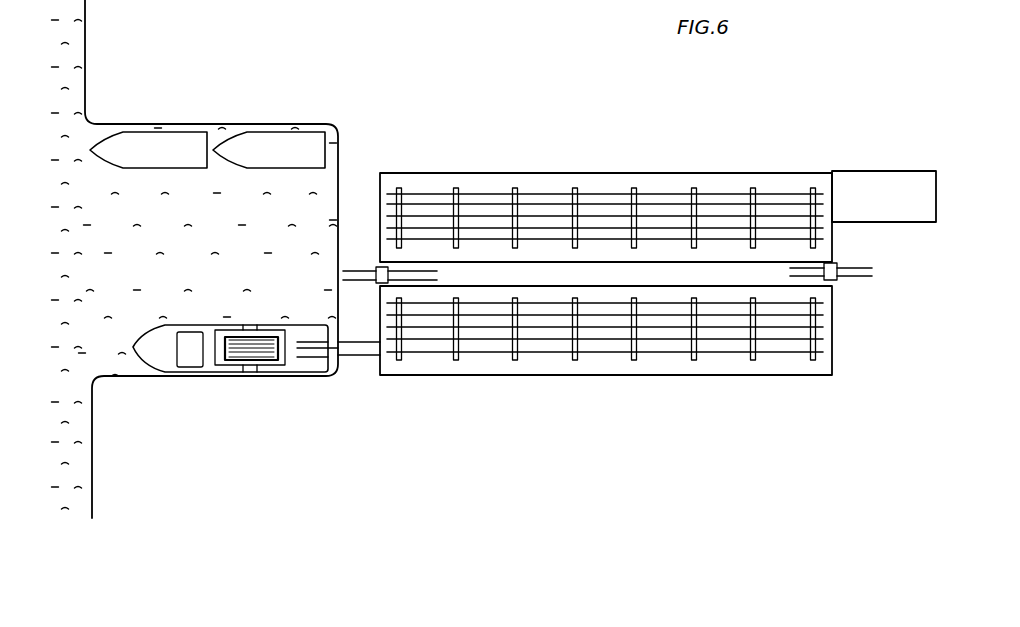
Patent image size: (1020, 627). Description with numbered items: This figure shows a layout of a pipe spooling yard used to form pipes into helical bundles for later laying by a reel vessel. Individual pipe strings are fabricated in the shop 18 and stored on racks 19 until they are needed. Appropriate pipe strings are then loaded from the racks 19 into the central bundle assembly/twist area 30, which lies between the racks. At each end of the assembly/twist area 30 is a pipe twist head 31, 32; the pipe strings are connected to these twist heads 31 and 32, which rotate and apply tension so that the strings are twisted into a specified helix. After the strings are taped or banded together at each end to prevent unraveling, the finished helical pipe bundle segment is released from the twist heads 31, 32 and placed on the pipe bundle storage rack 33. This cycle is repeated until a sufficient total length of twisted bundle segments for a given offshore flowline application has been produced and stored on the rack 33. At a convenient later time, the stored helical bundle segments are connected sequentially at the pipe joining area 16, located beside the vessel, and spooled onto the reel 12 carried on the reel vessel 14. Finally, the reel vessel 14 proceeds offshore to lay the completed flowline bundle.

The reel 12 is at (233, 363).
The reel vessel 14 is at (303, 323).
The pipe joining area 16 is at (365, 358).
The shop 18 is at (878, 189).
The racks 19 is at (513, 189).
The central bundle assembly/twist area 30 is at (553, 270).
The pipe twist head 31 is at (379, 266).
The pipe twist head 32 is at (837, 277).
The pipe bundle storage rack 33 is at (580, 358).